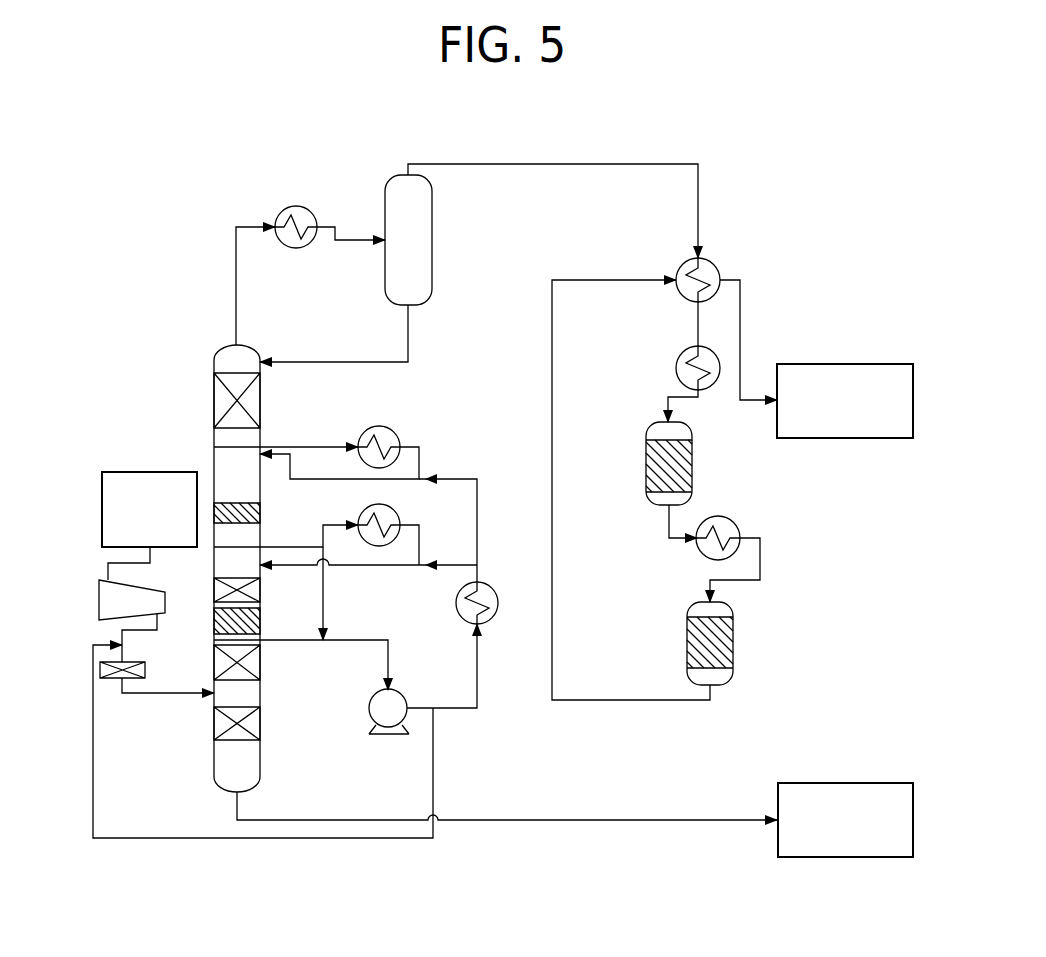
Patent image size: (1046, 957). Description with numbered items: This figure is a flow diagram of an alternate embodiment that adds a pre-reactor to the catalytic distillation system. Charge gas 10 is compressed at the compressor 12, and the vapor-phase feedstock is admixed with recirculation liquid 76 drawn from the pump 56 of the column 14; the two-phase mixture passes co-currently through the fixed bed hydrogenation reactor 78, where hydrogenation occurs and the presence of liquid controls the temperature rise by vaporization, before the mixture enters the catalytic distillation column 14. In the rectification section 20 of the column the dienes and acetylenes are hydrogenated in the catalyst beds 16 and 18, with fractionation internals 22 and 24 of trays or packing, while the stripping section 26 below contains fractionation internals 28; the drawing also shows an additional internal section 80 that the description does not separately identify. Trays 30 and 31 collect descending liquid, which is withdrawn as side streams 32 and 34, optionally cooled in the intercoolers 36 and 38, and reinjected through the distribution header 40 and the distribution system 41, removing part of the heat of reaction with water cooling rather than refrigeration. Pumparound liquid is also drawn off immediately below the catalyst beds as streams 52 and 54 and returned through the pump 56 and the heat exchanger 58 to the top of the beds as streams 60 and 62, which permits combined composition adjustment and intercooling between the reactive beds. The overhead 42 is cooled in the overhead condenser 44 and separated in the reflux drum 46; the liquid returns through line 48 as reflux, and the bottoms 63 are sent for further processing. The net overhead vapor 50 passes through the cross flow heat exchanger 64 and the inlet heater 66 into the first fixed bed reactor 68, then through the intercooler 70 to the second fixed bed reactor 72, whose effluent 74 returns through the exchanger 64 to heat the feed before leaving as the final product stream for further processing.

The charge gas 10 is at (146, 471).
The compressor 12 is at (165, 604).
The catalytic distillation column 14 is at (205, 401).
The catalyst bed 16 is at (254, 624).
The catalyst bed 18 is at (262, 501).
The rectification section 20 is at (262, 396).
The fractionation internals 22 is at (254, 672).
The fractionation internals 24 is at (249, 405).
The stripping section 26 is at (262, 770).
The fractionation internals 28 is at (254, 728).
The tray 30 is at (253, 441).
The tray 31 is at (254, 544).
The side stream 32 is at (325, 443).
The side stream 34 is at (327, 522).
The intercooler 36 is at (388, 437).
The intercooler 38 is at (389, 515).
The distribution header 40 is at (237, 455).
The distribution system 41 is at (237, 567).
The overhead 42 is at (237, 273).
The overhead condenser 44 is at (289, 209).
The reflux drum 46 is at (432, 230).
The reflux line 48 is at (393, 363).
The overhead vapor 50 is at (593, 163).
The pumparound stream 52 is at (288, 642).
The pumparound stream 54 is at (325, 591).
The pump 56 is at (402, 694).
The heat exchanger 58 is at (464, 628).
The return stream 60 is at (456, 568).
The return stream 62 is at (478, 516).
The bottoms 63 is at (369, 818).
The cross flow heat exchanger 64 is at (684, 299).
The inlet heater 66 is at (676, 352).
The first fixed bed reactor 68 is at (647, 457).
The intercooler 70 is at (727, 519).
The second fixed bed reactor 72 is at (688, 633).
The effluent stream 74 is at (741, 319).
The recirculation liquid 76 is at (435, 762).
The fixed bed reactor 78 is at (146, 668).
The packing section 80 is at (254, 593).